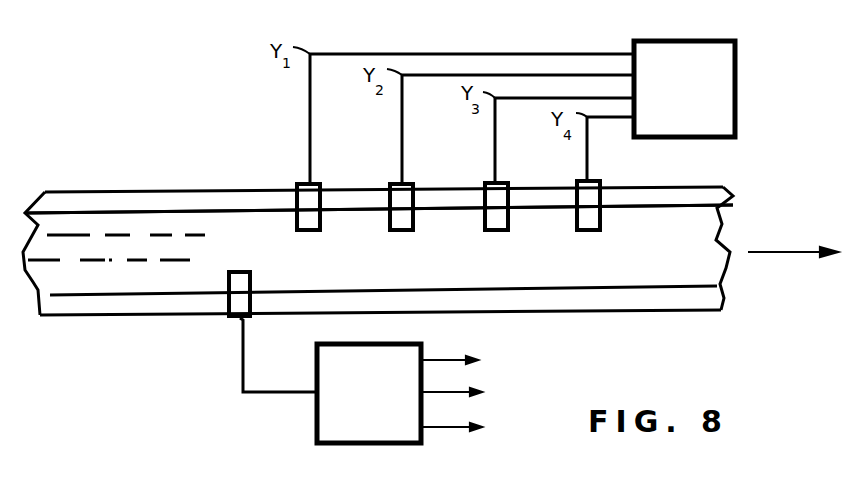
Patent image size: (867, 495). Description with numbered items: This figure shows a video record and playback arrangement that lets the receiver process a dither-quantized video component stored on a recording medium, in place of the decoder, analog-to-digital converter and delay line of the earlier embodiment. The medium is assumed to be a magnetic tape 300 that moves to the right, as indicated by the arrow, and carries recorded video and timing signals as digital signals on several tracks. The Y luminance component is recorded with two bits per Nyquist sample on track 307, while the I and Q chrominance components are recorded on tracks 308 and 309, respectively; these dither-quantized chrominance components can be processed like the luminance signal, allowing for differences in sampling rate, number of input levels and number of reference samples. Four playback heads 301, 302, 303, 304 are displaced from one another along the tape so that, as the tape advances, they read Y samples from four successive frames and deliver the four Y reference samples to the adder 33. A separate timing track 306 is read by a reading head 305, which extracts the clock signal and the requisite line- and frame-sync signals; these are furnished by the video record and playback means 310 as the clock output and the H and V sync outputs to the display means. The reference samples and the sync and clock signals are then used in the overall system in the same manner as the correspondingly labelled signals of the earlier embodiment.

The magnetic tape 300 is at (726, 186).
The playback head 301 is at (594, 201).
The playback head 302 is at (502, 203).
The playback head 303 is at (407, 204).
The playback head 304 is at (314, 204).
The reading head 305 is at (250, 318).
The timing track 306 is at (583, 288).
The track 307 is at (218, 212).
The track 308 is at (164, 237).
The track 309 is at (131, 262).
The video record and playback means 310 is at (335, 405).
The adder 33 is at (655, 65).